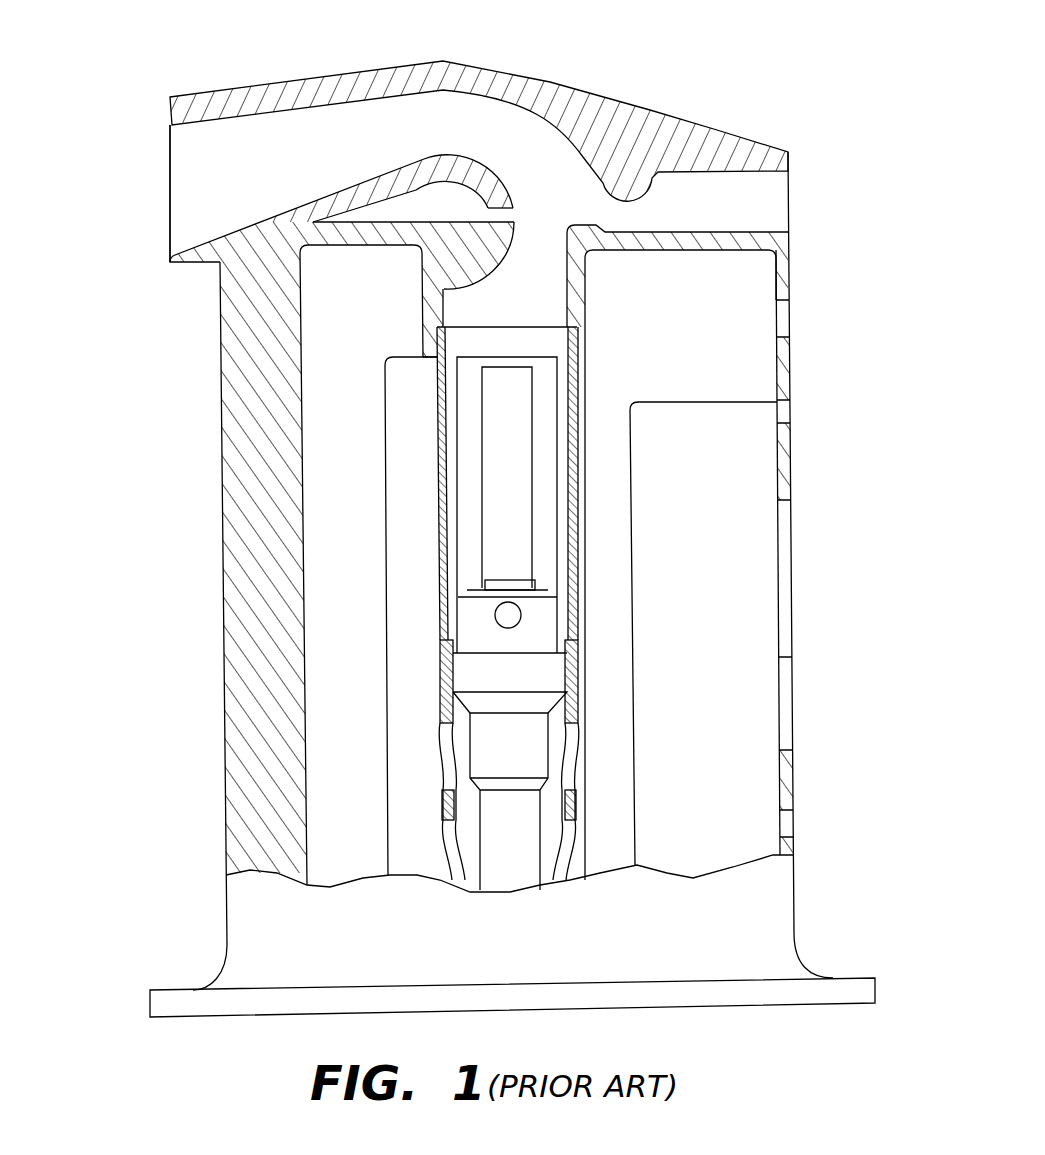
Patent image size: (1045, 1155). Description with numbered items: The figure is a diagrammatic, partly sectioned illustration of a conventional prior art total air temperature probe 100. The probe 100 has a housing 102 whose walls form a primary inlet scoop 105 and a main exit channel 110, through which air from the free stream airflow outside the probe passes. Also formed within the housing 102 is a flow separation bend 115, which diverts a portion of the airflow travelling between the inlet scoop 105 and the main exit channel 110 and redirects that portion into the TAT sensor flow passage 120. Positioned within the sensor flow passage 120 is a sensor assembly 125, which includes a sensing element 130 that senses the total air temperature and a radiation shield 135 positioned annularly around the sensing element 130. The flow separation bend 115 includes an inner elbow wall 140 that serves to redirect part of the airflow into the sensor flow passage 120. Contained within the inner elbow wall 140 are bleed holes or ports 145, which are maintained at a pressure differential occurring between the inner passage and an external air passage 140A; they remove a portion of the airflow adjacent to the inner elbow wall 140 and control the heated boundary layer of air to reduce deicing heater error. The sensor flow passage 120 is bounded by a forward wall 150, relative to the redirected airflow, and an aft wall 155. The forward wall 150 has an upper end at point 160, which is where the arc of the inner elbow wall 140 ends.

The total air temperature probe 100 is at (168, 60).
The housing 102 is at (318, 82).
The inlet scoop 105 is at (162, 185).
The main exit channel 110 is at (800, 200).
The flow separation bend 115 is at (477, 135).
The sensor flow passage 120 is at (647, 101).
The sensor assembly 125 is at (597, 392).
The sensing element 130 is at (513, 405).
The radiation shield 135 is at (558, 465).
The inner elbow wall 140 is at (514, 212).
The external air passage 140A is at (439, 213).
The bleed ports 145 is at (496, 212).
The forward wall 150 is at (442, 317).
The aft wall 155 is at (583, 278).
The point 160 is at (443, 290).